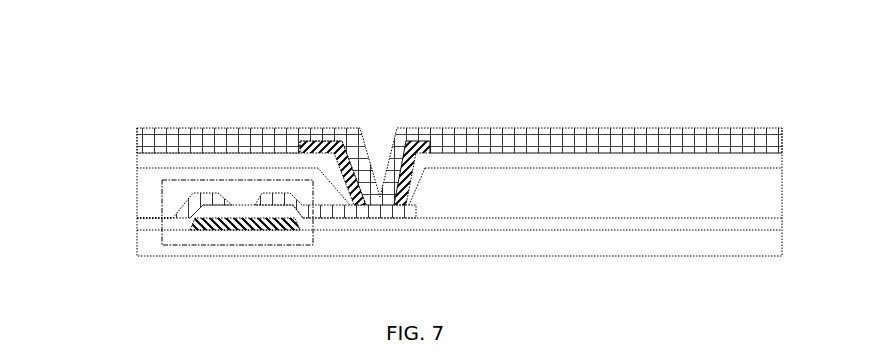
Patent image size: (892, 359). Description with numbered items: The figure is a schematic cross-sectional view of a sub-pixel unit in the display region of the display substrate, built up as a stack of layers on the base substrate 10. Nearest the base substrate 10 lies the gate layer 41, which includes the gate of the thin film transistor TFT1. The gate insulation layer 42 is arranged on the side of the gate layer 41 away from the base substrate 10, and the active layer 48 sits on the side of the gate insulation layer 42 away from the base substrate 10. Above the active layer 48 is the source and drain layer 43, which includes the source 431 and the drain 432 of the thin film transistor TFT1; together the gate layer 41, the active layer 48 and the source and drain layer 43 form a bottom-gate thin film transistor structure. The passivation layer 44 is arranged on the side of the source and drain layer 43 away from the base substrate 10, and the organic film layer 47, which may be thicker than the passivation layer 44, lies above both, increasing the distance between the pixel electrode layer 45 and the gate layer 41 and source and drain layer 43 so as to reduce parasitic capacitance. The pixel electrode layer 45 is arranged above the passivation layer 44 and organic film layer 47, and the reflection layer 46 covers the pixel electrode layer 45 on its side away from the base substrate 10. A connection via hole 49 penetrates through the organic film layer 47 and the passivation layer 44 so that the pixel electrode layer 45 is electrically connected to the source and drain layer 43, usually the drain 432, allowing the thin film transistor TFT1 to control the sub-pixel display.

The base substrate 10 is at (202, 248).
The gate insulation layer 42 is at (152, 221).
The organic film layer 47 is at (150, 195).
The passivation layer 44 is at (137, 152).
The thin film transistor TFT1 is at (312, 238).
The gate layer 41 is at (236, 207).
The active layer 48 is at (240, 224).
The source and drain layer 43 is at (294, 114).
The source 431 is at (205, 193).
The drain 432 is at (275, 193).
The pixel electrode layer 45 is at (325, 145).
The connection via hole 49 is at (382, 152).
The reflection layer 46 is at (168, 130).